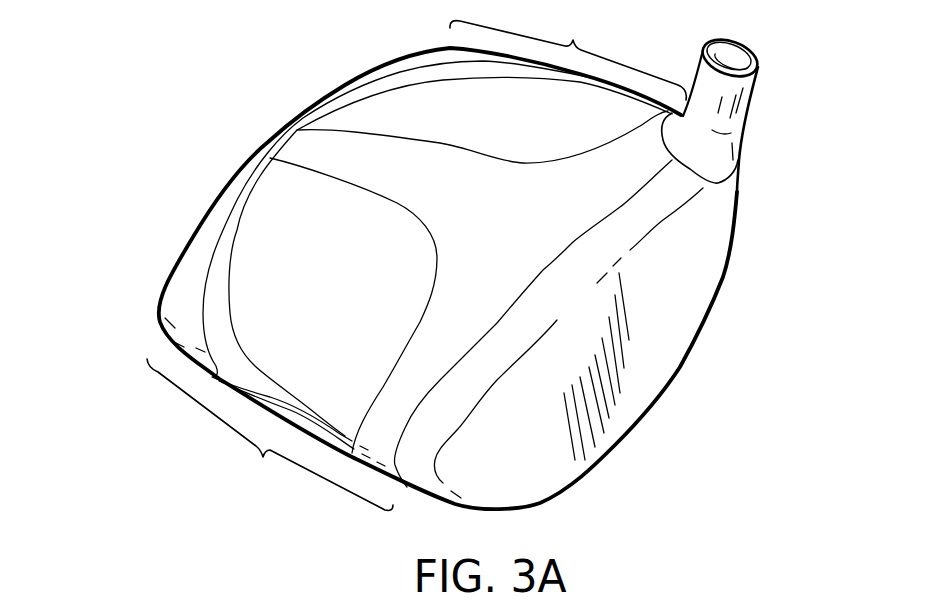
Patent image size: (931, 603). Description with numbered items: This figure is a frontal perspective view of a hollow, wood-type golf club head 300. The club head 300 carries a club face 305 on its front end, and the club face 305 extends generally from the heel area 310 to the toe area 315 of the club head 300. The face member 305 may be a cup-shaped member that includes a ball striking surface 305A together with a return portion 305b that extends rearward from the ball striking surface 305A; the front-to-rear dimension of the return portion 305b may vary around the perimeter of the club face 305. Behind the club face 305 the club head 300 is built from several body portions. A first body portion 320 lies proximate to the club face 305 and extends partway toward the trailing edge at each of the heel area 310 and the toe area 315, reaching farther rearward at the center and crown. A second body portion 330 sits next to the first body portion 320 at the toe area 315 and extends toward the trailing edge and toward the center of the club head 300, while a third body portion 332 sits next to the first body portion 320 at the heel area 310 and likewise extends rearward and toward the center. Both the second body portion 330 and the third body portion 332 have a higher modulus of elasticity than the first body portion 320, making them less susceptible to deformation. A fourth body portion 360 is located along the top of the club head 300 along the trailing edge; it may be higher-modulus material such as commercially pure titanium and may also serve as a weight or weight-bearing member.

The club head 300 is at (206, 132).
The club face 305 is at (650, 350).
The ball striking surface 305A is at (687, 282).
The return portion 305b is at (580, 258).
The heel area 310 is at (568, 50).
The toe area 315 is at (270, 434).
The first body portion 320 is at (494, 287).
The second body portion 330 is at (351, 282).
The third body portion 332 is at (498, 127).
The fourth body portion 360 is at (305, 118).